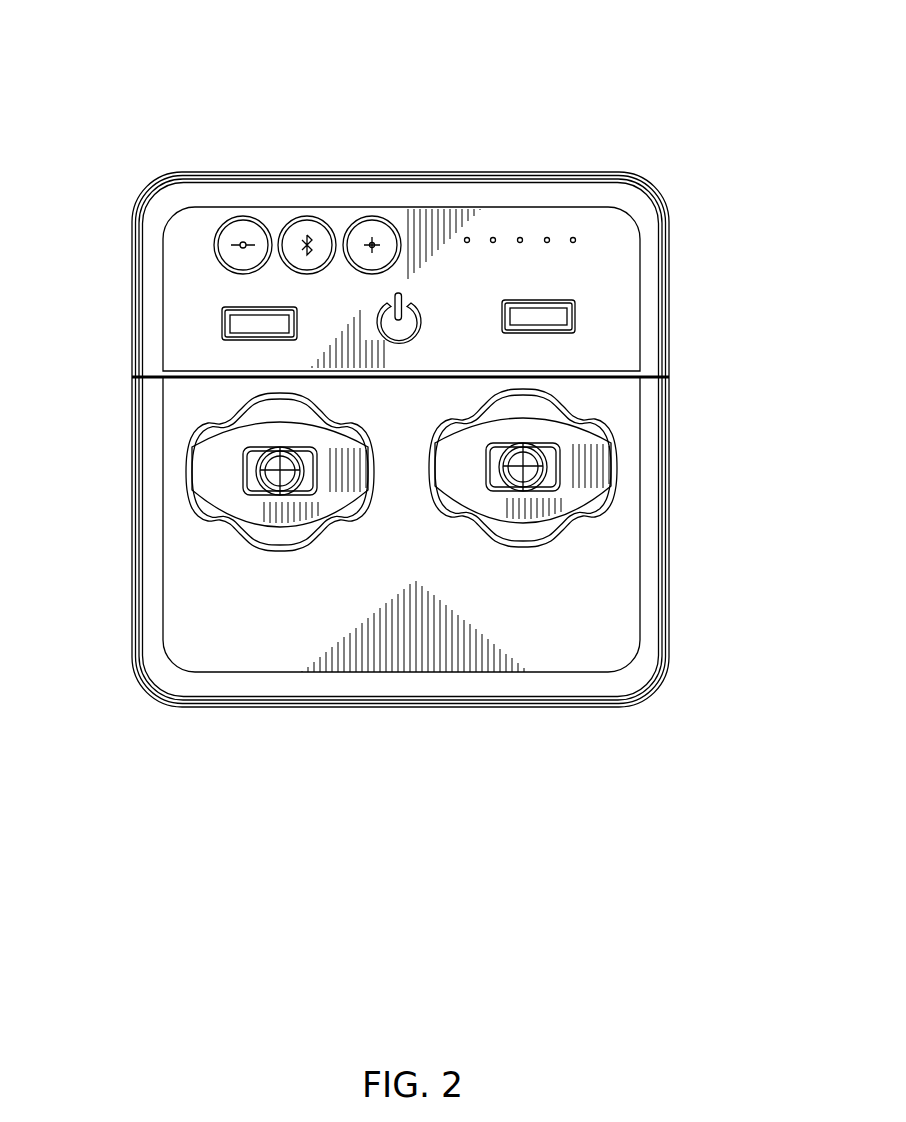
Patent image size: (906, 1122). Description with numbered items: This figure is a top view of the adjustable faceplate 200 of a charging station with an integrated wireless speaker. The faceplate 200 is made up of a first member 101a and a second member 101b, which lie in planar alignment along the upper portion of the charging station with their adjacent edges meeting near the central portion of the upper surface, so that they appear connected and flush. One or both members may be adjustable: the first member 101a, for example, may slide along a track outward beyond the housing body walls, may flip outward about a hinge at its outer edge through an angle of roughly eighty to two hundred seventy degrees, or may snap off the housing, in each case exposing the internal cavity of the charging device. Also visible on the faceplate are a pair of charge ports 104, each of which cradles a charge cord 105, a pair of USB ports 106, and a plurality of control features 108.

The adjustable faceplate 200 is at (405, 67).
The first member 101a is at (650, 390).
The second member 101b is at (643, 256).
The charge port 104 is at (592, 432).
The charge cord 105 is at (547, 467).
The USB port 106 is at (560, 315).
The control features 108 is at (515, 229).